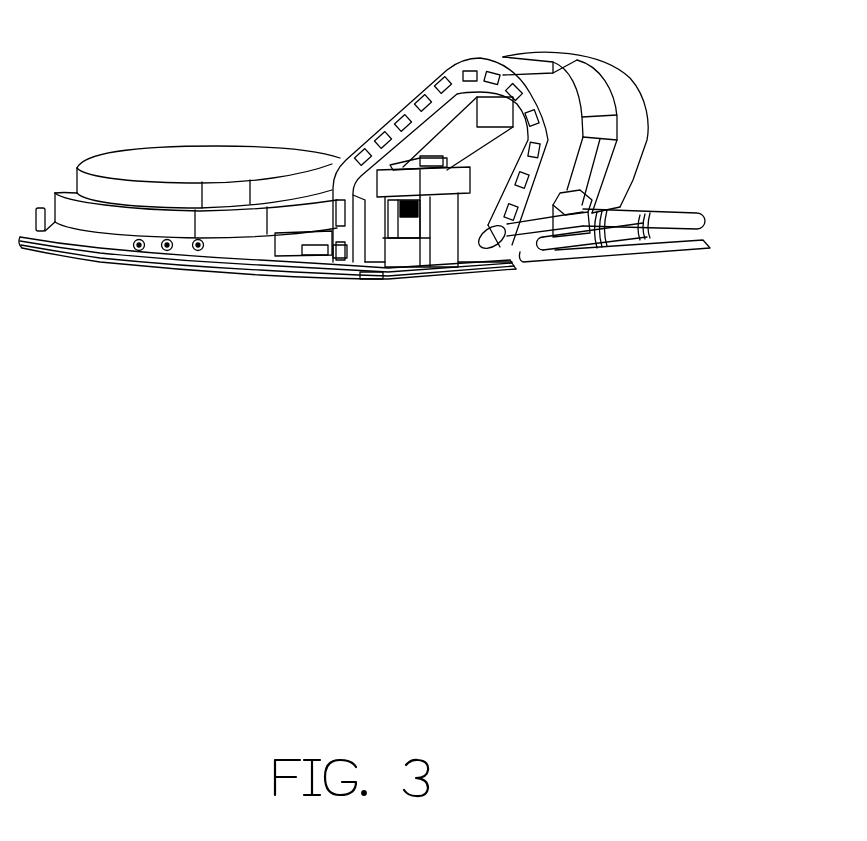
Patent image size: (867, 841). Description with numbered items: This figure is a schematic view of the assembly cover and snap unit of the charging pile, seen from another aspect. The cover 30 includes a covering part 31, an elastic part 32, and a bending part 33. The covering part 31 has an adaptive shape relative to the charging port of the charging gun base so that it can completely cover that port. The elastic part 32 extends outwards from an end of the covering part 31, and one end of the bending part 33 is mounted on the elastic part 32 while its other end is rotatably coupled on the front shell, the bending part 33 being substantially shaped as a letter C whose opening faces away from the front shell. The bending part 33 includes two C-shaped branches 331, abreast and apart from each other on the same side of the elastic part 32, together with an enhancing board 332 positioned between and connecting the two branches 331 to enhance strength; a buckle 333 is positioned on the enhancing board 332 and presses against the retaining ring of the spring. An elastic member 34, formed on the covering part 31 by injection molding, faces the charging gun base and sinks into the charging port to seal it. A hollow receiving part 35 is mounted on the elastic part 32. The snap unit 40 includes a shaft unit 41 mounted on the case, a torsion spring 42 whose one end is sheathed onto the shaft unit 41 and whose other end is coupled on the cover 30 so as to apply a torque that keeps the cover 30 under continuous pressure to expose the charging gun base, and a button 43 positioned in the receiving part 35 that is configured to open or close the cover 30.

The cover 30 is at (362, 45).
The covering part 31 is at (237, 243).
The elastic part 32 is at (407, 283).
The bending part 33 is at (654, 160).
The branch 331 is at (625, 157).
The enhancing board 332 is at (598, 208).
The buckle 333 is at (635, 244).
The elastic member 34 is at (117, 178).
The receiving part 35 is at (442, 243).
The snap unit 40 is at (635, 263).
The shaft unit 41 is at (563, 243).
The torsion spring 42 is at (607, 245).
The button 43 is at (428, 158).